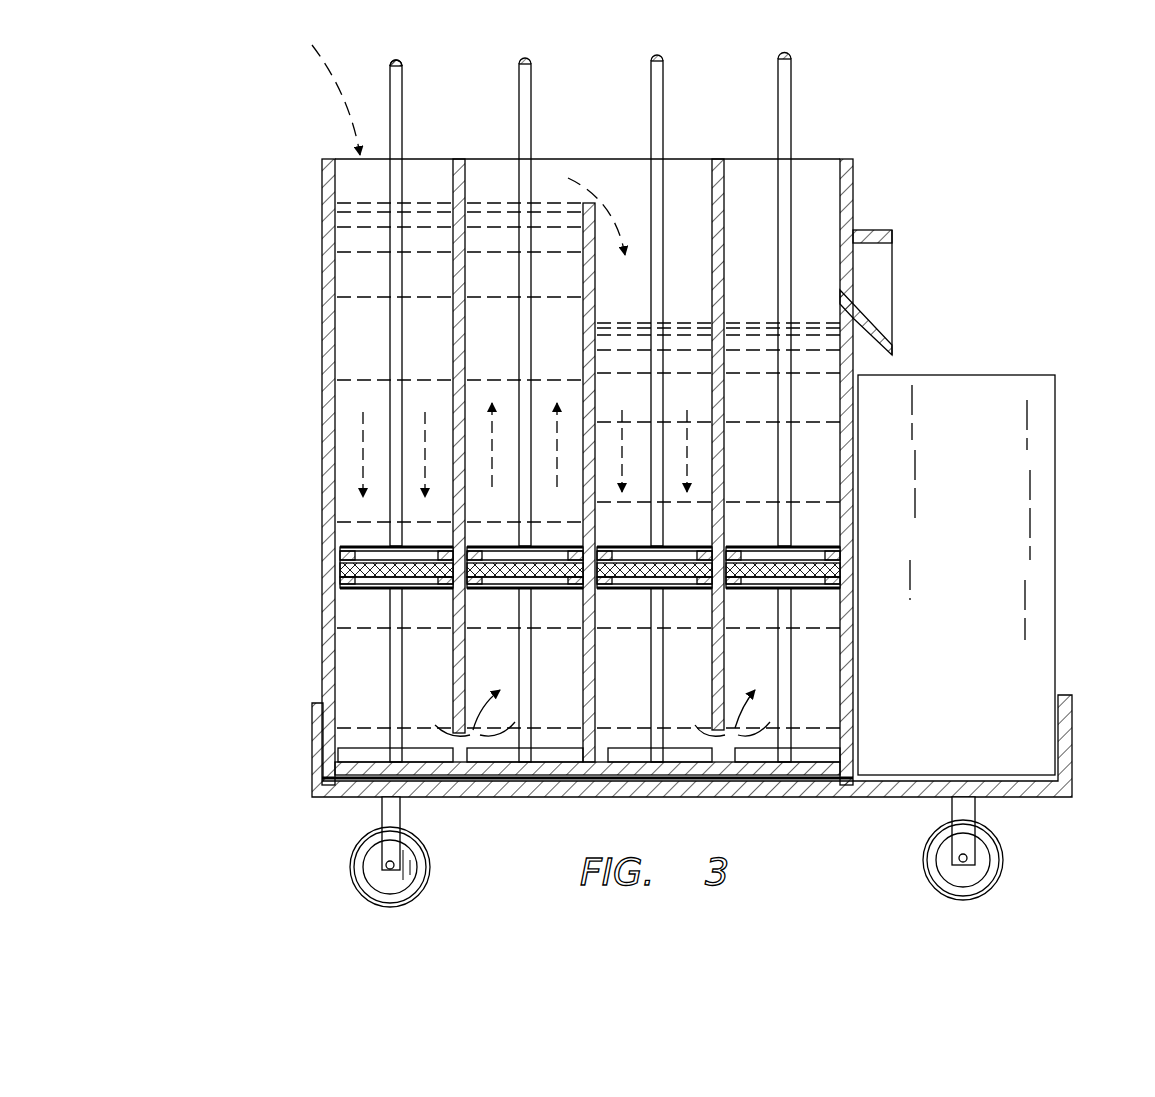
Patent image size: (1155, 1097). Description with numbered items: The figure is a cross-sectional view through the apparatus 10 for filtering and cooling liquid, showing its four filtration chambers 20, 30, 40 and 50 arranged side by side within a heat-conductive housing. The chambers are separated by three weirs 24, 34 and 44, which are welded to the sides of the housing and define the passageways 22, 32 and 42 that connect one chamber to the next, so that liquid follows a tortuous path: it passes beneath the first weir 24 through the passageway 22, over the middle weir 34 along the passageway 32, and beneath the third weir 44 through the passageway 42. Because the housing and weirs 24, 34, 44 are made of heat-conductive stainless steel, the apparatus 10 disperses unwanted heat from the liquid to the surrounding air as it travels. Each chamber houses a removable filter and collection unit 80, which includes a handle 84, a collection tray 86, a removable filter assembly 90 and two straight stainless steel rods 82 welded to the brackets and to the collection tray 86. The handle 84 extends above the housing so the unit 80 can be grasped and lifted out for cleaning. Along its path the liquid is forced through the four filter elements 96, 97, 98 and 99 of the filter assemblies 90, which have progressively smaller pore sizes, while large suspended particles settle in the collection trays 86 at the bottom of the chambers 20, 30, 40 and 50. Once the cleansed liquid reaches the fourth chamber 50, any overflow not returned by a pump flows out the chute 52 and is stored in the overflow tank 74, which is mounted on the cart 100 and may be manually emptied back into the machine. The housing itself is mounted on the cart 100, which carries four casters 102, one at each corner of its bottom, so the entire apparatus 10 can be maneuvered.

The apparatus for filtering and cooling liquid 10 is at (310, 193).
The first filtration chamber 20 is at (376, 622).
The passageway 22 is at (462, 755).
The weir 24 is at (458, 160).
The second filtration chamber 30 is at (509, 622).
The passageway 32 is at (594, 160).
The weir 34 is at (590, 780).
The third filtration chamber 40 is at (636, 620).
The passageway 42 is at (722, 748).
The weir 44 is at (720, 160).
The fourth filtration chamber 50 is at (767, 620).
The chute 52 is at (878, 275).
The overflow tank 74 is at (988, 483).
The removable filter and collection unit 80 is at (396, 63).
The straight stainless steel rods 82 is at (397, 648).
The handle 84 is at (412, 58).
The collection tray 86 is at (378, 748).
The removable filter assembly 90 is at (523, 576).
The filter element 96 is at (330, 565).
The filter element 97 is at (540, 572).
The filter element 98 is at (677, 572).
The filter element 99 is at (815, 570).
The cart 100 is at (1073, 715).
The casters 102 is at (350, 853).